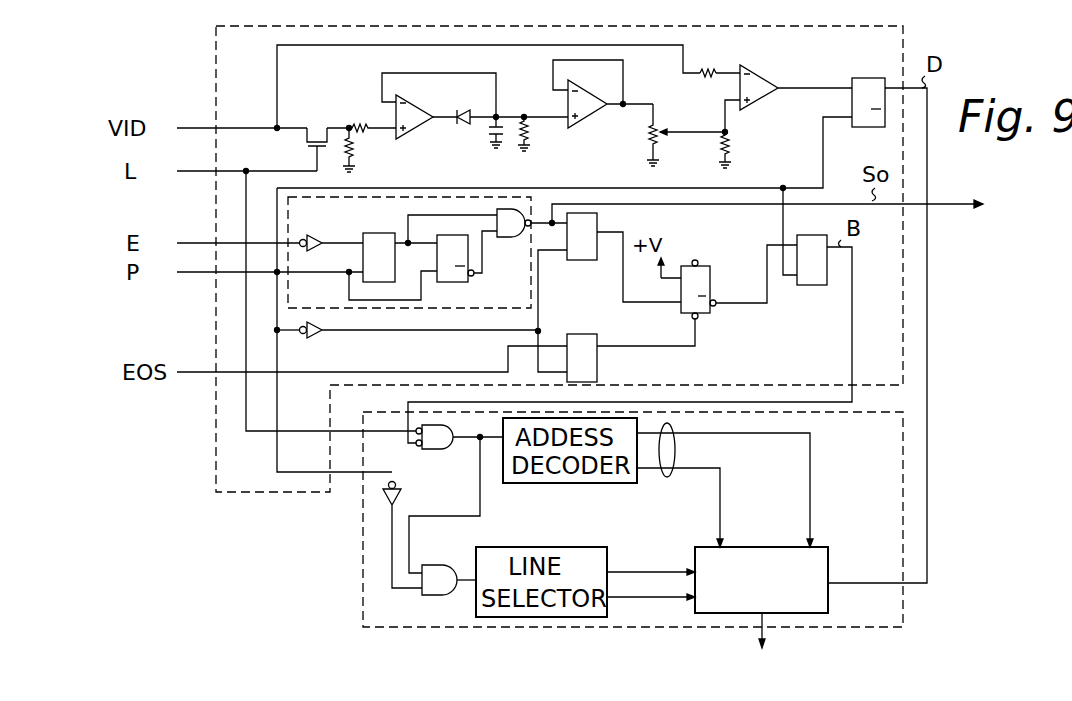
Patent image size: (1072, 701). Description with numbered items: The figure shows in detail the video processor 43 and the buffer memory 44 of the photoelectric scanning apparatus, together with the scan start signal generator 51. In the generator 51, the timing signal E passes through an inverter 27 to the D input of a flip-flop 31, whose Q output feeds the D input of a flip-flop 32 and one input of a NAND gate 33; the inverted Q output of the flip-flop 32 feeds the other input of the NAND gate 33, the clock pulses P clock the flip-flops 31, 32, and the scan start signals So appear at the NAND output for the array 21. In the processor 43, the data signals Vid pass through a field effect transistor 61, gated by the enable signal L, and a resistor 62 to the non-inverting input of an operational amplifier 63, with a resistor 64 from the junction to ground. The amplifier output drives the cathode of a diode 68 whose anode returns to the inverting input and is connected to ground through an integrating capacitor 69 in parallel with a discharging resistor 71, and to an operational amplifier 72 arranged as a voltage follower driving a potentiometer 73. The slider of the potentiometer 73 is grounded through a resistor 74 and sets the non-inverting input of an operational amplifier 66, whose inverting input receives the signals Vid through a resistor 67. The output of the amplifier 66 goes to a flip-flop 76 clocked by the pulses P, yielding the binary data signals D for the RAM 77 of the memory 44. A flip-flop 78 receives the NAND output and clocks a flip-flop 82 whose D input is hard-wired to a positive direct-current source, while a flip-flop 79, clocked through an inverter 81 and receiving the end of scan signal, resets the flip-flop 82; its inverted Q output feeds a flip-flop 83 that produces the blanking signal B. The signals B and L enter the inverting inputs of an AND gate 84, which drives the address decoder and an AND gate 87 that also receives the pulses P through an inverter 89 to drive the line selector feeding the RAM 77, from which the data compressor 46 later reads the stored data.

The video processor 43 is at (216, 45).
The buffer memory 44 is at (905, 500).
The scan start signal generator 51 is at (288, 218).
The field effect transistor 61 is at (317, 128).
The resistor 62 is at (361, 128).
The operational amplifier 63 is at (410, 100).
The resistor 64 is at (352, 153).
The operational amplifier 66 is at (766, 84).
The resistor 67 is at (711, 72).
The diode 68 is at (466, 112).
The integrating capacitor 69 is at (496, 136).
The discharging resistor 71 is at (530, 117).
The operational amplifier 72 is at (602, 116).
The potentiometer 73 is at (654, 136).
The resistor 74 is at (731, 146).
The flip-flop 76 is at (870, 78).
The RAM 77 is at (830, 601).
The flip-flop 78 is at (585, 262).
The flip-flop 79 is at (586, 334).
The inverter 81 is at (316, 338).
The flip-flop 82 is at (710, 318).
The flip-flop 83 is at (813, 290).
The AND gate 84 is at (441, 449).
The AND gate 87 is at (440, 565).
The inverter 89 is at (380, 502).
The inverter 27 is at (316, 238).
The flip-flop 31 is at (379, 233).
The flip-flop 32 is at (462, 282).
The NAND gate 33 is at (512, 232).
The array 21 is at (1014, 205).
The data compressor 46 is at (760, 646).